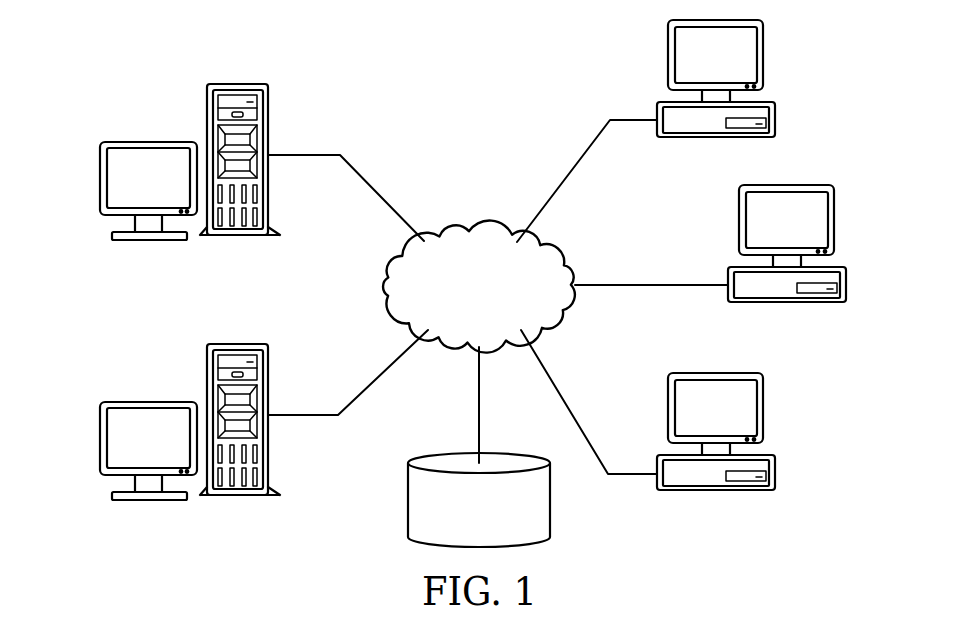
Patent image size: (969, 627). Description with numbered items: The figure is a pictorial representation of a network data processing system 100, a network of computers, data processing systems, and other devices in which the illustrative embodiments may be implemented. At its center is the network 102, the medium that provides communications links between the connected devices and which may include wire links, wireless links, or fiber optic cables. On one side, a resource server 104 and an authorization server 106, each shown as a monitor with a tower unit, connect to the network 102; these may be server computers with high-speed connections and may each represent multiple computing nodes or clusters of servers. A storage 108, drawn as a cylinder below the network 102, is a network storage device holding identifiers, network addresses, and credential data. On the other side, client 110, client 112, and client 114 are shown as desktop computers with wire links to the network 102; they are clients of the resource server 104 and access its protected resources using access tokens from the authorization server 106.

The network data processing system 100 is at (342, 64).
The network 102 is at (453, 233).
The resource server 104 is at (102, 180).
The authorization server 106 is at (100, 437).
The storage 108 is at (408, 497).
The client 110 is at (778, 110).
The client 112 is at (848, 293).
The client 114 is at (778, 485).